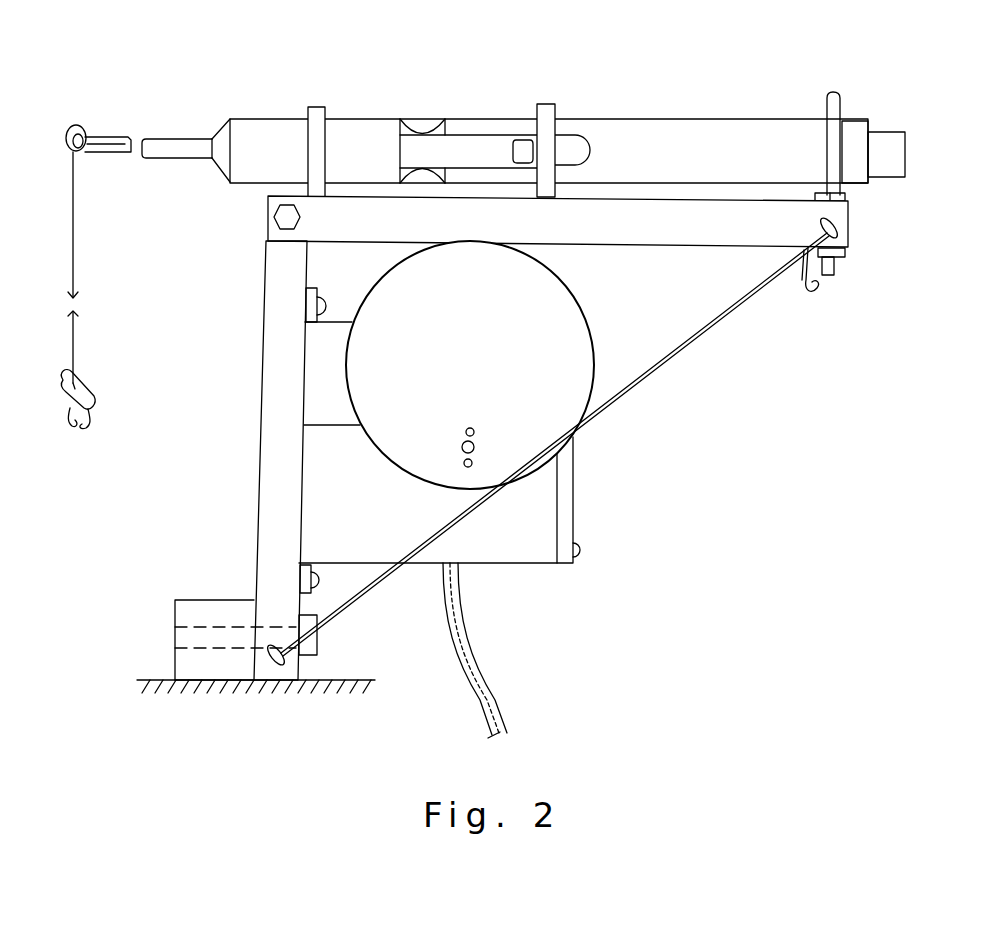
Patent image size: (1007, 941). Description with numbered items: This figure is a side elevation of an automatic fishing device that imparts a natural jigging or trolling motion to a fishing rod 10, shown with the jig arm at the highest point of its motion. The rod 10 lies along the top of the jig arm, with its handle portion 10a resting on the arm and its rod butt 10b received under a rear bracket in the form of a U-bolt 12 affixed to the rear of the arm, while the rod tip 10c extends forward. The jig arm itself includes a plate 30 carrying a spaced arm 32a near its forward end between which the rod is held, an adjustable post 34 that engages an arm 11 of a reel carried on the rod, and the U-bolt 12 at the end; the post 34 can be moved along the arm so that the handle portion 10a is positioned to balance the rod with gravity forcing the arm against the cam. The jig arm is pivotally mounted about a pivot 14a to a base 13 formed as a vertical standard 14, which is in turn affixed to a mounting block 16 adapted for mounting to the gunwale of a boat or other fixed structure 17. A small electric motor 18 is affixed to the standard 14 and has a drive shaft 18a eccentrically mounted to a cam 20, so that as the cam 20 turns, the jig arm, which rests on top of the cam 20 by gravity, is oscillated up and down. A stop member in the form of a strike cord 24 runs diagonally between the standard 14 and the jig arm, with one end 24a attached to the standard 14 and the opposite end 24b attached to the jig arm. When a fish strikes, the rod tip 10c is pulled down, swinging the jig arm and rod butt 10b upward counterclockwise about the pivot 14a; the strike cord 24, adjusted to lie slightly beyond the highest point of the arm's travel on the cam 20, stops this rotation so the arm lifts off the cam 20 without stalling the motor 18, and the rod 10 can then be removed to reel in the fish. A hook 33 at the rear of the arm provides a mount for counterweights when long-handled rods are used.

The fishing rod 10 is at (165, 127).
The handle portion 10a is at (652, 119).
The rod butt 10b is at (845, 120).
The rod tip 10c is at (97, 137).
The arm of a reel 11 is at (509, 140).
The U-bolt 12 is at (818, 136).
The base 13 is at (158, 658).
The vertical standard 14 is at (253, 524).
The pivot 14a is at (265, 216).
The mounting block 16 is at (175, 614).
The ground surface 17 is at (368, 688).
The electric motor 18 is at (555, 532).
The drive shaft 18a is at (458, 446).
The cam 20 is at (500, 366).
The strike cord 24 is at (372, 600).
The end of strike cord 24a is at (278, 668).
The opposite end of strike cord 24b is at (838, 226).
The plate 30 is at (405, 197).
The spaced arm 32a is at (318, 107).
The hook 33 is at (803, 292).
The adjustable post 34 is at (550, 104).